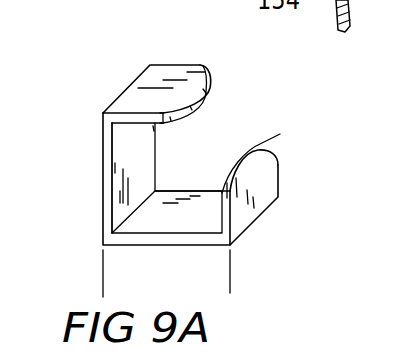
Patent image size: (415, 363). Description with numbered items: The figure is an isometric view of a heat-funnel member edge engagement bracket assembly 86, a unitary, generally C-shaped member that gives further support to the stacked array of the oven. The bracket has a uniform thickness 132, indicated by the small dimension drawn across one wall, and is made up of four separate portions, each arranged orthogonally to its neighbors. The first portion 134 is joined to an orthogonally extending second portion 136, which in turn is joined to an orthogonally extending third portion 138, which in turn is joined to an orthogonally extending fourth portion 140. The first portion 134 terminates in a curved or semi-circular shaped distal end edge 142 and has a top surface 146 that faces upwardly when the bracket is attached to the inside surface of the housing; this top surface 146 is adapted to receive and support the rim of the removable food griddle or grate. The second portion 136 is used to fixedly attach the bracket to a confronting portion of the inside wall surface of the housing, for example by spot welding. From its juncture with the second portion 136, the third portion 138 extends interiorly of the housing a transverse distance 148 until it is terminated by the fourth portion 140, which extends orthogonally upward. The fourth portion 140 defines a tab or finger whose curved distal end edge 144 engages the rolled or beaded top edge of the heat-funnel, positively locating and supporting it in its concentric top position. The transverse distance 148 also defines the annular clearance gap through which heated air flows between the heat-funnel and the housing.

The heat-funnel member edge engagement bracket assembly 86 is at (268, 237).
The uniform thickness 132 is at (147, 152).
The first portion 134 is at (185, 122).
The second portion 136 is at (134, 170).
The third portion 138 is at (204, 206).
The fourth portion 140 is at (260, 188).
The distal end edge 142 is at (205, 92).
The distal end edge 144 is at (275, 136).
The top surface 146 is at (138, 91).
The transverse distance 148 is at (229, 286).